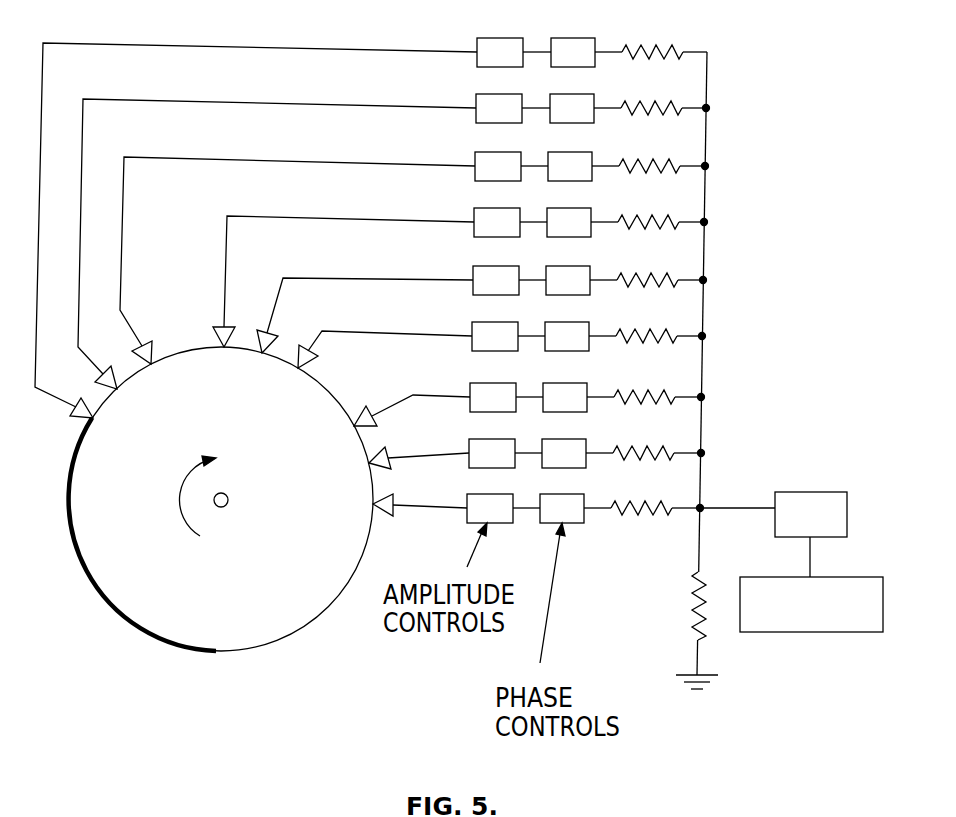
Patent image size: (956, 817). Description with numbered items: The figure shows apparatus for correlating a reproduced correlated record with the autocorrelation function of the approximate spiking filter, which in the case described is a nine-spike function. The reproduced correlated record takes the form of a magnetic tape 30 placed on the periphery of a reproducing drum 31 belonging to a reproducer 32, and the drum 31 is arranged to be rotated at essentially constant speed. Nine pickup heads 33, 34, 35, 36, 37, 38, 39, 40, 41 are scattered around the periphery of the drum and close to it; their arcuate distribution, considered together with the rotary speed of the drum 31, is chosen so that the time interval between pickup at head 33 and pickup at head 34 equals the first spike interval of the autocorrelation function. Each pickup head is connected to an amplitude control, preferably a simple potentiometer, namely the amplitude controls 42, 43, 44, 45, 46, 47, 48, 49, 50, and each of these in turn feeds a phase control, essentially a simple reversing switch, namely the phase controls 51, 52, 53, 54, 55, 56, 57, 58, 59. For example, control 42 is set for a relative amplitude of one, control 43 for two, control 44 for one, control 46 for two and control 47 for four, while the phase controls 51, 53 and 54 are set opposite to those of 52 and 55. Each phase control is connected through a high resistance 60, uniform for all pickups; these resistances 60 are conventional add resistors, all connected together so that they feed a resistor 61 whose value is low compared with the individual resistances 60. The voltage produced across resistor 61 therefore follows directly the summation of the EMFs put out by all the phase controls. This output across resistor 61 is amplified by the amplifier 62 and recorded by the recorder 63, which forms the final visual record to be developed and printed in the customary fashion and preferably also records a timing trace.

The magnetic tape 30 is at (122, 620).
The reproducing drum 31 is at (224, 632).
The reproducer 32 is at (336, 620).
The pickup head 33 is at (393, 514).
The pickup head 34 is at (389, 456).
The pickup head 35 is at (371, 414).
The pickup head 36 is at (318, 357).
The pickup head 37 is at (275, 338).
The pickup head 38 is at (230, 328).
The pickup head 39 is at (145, 343).
The pickup head 40 is at (106, 370).
The pickup head 41 is at (78, 403).
The amplitude control 42 is at (469, 494).
The amplitude control 43 is at (471, 439).
The amplitude control 44 is at (472, 383).
The amplitude control 45 is at (474, 322).
The amplitude control 46 is at (475, 266).
The amplitude control 47 is at (476, 208).
The amplitude control 48 is at (477, 152).
The amplitude control 49 is at (478, 94).
The amplitude control 50 is at (479, 38).
The phase control 51 is at (568, 494).
The phase control 52 is at (570, 439).
The phase control 53 is at (571, 383).
The phase control 54 is at (573, 322).
The phase control 55 is at (574, 266).
The phase control 56 is at (575, 208).
The phase control 57 is at (576, 152).
The phase control 58 is at (578, 94).
The phase control 59 is at (579, 38).
The high resistance 60 is at (655, 48).
The resistor 61 is at (690, 603).
The amplifier 62 is at (800, 492).
The recorder 63 is at (850, 632).